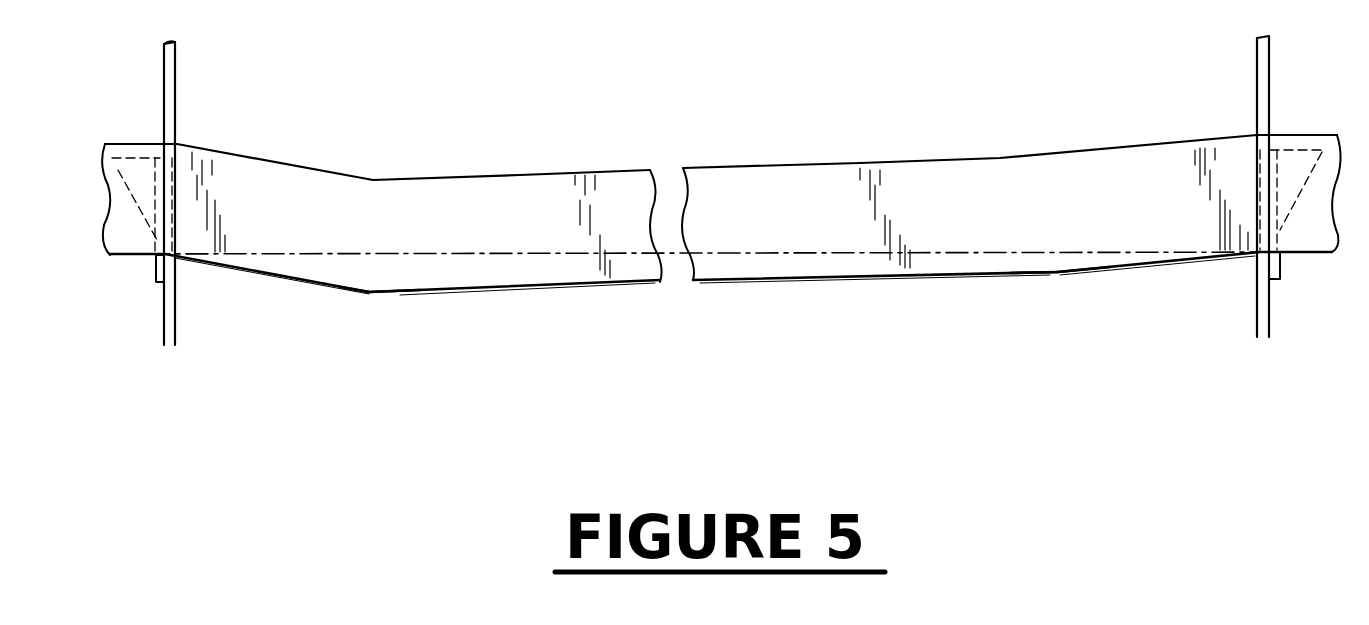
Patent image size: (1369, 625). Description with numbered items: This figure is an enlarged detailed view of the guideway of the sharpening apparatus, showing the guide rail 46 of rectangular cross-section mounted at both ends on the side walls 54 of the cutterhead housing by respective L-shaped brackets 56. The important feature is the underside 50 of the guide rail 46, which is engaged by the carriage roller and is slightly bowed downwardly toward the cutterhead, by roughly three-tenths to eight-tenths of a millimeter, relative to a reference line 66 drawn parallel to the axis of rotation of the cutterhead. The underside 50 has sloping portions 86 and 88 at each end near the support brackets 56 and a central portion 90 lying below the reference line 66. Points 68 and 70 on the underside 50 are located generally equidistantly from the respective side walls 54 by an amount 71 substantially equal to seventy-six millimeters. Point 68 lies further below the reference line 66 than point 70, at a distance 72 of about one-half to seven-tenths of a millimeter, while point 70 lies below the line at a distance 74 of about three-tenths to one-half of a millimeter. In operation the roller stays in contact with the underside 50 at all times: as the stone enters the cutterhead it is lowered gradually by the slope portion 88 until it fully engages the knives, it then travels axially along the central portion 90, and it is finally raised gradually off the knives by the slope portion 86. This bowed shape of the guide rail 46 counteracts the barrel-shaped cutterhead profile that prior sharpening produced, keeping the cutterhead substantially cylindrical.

The guide rail 46 is at (960, 152).
The underside of the guide rail 50 is at (813, 290).
The side walls 54 is at (177, 58).
The L-shaped brackets 56 is at (155, 278).
The reference line 66 is at (478, 253).
The point on the underside 68 is at (378, 300).
The point on the underside 70 is at (1045, 285).
The distance from sidewalls 71 is at (175, 357).
The distance of point 68 below reference line 72 is at (283, 337).
The distance of point 70 below reference line 74 is at (1172, 312).
The sloping portion 86 is at (248, 273).
The sloping portion 88 is at (1228, 257).
The central portion 90 is at (628, 284).